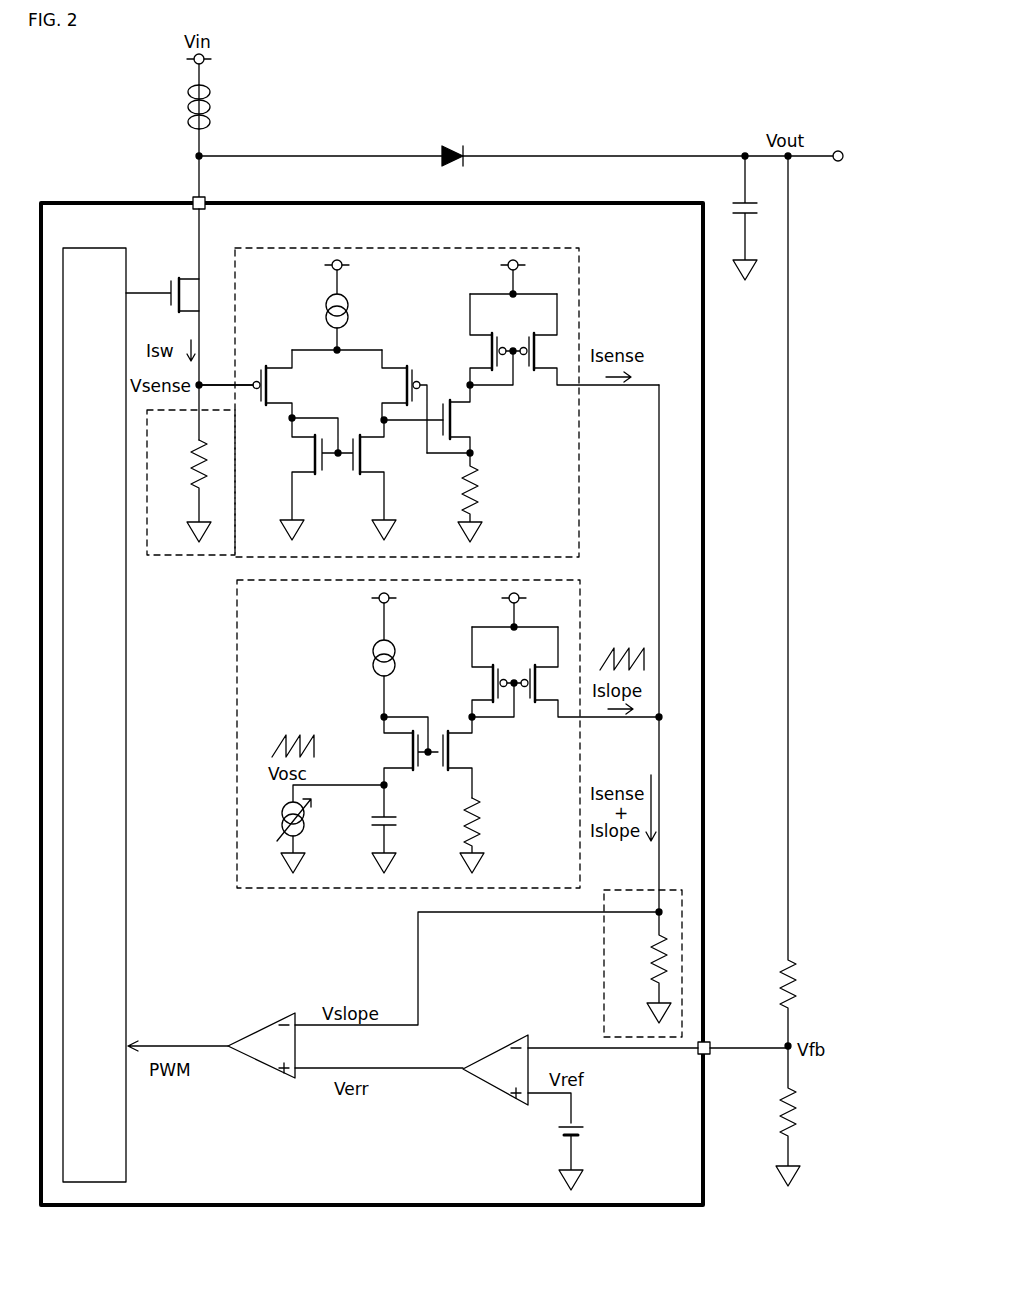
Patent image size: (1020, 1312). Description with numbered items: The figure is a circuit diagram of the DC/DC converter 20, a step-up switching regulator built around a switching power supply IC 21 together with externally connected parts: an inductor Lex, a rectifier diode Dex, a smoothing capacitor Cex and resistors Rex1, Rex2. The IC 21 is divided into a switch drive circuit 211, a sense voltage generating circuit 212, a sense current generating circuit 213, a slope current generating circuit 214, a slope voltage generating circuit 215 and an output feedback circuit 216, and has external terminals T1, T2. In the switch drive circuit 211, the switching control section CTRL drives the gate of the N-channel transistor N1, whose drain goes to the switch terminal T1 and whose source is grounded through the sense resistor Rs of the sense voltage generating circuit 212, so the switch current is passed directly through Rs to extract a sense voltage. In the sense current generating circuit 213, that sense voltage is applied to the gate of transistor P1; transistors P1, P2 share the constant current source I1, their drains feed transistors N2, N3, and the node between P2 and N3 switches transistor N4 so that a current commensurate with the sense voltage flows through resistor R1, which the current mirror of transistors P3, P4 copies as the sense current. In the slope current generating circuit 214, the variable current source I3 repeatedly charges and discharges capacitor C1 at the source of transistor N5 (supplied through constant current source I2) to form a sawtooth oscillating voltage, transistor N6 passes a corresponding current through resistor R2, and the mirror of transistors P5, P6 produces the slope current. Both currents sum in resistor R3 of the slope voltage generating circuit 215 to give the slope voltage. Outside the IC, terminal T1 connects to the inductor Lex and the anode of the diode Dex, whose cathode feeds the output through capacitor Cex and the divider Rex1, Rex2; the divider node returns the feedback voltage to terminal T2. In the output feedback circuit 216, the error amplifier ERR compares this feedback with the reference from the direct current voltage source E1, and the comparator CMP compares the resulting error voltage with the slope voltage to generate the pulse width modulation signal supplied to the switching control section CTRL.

The DC/DC converter 20 is at (608, 56).
The switching power supply IC 21 is at (704, 572).
The switch drive circuit 211 is at (137, 239).
The sense voltage generating circuit 212 is at (192, 557).
The sense current generating circuit 213 is at (409, 249).
The slope current generating circuit 214 is at (236, 739).
The slope voltage generating circuit 215 is at (602, 1001).
The output feedback circuit 216 is at (442, 1137).
The inductor Lex is at (189, 108).
The rectifier diode Dex is at (457, 144).
The smoothing capacitor Cex is at (739, 202).
The resistor Rex1 is at (777, 992).
The resistor Rex2 is at (780, 1117).
The external terminal T1 is at (192, 200).
The external terminal T2 is at (707, 1045).
The switching control section CTRL is at (127, 646).
The N-channel field effect transistor N1 is at (172, 281).
The sense resistor Rs is at (191, 468).
The constant current source I1 is at (348, 311).
The P-channel field effect transistor P1 is at (272, 368).
The P-channel field effect transistor P2 is at (406, 368).
The N-channel field effect transistor N2 is at (312, 478).
The N-channel field effect transistor N3 is at (360, 478).
The N-channel field effect transistor N4 is at (457, 402).
The P-channel field effect transistor P3 is at (492, 337).
The P-channel field effect transistor P4 is at (536, 337).
The resistor R1 is at (480, 488).
The constant current source I2 is at (373, 661).
The N-channel field effect transistor N5 is at (404, 774).
The N-channel field effect transistor N6 is at (454, 774).
The P-channel field effect transistor P5 is at (494, 670).
The P-channel field effect transistor P6 is at (537, 670).
The resistor R2 is at (482, 822).
The variable current source I3 is at (281, 820).
The capacitor C1 is at (371, 820).
The resistor R3 is at (650, 960).
The comparator CMP is at (261, 1028).
The error amplifier ERR is at (495, 1055).
The direct current voltage source E1 is at (581, 1135).